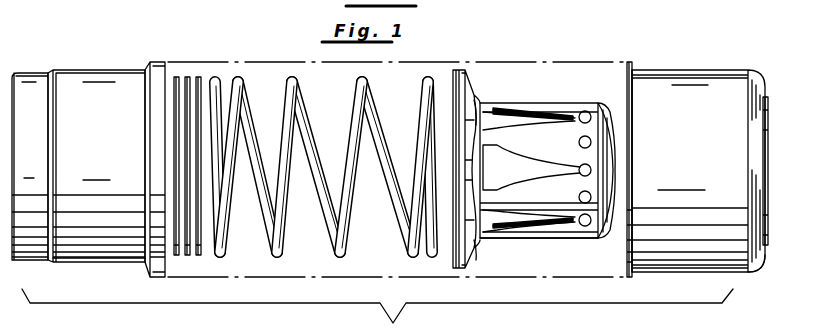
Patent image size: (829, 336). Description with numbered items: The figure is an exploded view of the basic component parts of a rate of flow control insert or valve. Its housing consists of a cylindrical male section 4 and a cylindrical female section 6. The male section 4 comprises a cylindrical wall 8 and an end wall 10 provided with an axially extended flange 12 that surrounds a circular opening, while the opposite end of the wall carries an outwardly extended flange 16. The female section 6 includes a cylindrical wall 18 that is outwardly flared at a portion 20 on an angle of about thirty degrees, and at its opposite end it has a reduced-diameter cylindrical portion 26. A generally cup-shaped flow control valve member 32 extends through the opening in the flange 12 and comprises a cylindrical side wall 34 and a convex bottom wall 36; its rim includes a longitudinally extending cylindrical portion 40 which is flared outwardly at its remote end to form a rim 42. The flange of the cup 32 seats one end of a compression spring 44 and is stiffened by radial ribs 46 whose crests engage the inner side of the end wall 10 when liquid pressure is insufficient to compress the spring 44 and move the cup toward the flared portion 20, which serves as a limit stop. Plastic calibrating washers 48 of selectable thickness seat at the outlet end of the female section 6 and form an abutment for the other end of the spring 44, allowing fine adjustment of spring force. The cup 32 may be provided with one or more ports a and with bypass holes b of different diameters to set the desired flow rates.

The cylindrical male section 4 is at (686, 63).
The cylindrical female section 6 is at (101, 84).
The cylindrical wall 8 is at (653, 68).
The end wall 10 is at (757, 260).
The axially extended flange 12 is at (765, 95).
The outwardly extended flange 16 is at (633, 118).
The cylindrical wall 18 is at (80, 258).
The outwardly flared portion 20 is at (153, 66).
The reduced-diameter cylindrical portion 26 is at (36, 72).
The cup-shaped flow control valve member 32 is at (570, 96).
The cylindrical side wall 34 is at (520, 238).
The convex bottom wall 36 is at (613, 135).
The longitudinally extending cylindrical portion 40 is at (459, 90).
The flared rim 42 is at (462, 268).
The compression spring 44 is at (310, 115).
The radial ribs 46 is at (481, 108).
The plastic calibrating washers 48 is at (198, 76).
The ports a is at (490, 119).
The bypass holes b is at (580, 171).